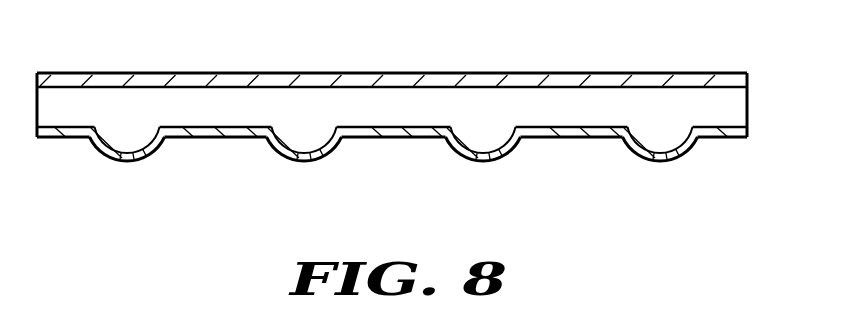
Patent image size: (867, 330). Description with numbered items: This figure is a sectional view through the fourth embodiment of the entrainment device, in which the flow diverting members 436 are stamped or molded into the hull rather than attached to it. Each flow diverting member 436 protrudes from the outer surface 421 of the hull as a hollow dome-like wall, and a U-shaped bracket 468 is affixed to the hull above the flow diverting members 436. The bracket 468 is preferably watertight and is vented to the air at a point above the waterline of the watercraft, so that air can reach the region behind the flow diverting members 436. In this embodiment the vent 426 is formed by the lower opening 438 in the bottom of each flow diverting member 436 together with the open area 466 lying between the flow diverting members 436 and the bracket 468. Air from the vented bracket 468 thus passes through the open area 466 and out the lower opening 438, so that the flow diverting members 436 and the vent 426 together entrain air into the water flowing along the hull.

The U-shaped bracket 468 is at (268, 80).
The open area 466 is at (481, 100).
The outer surface 421 is at (392, 166).
The vent 426 is at (482, 166).
The lower opening 438 is at (468, 140).
The flow diverting member 436 is at (508, 148).